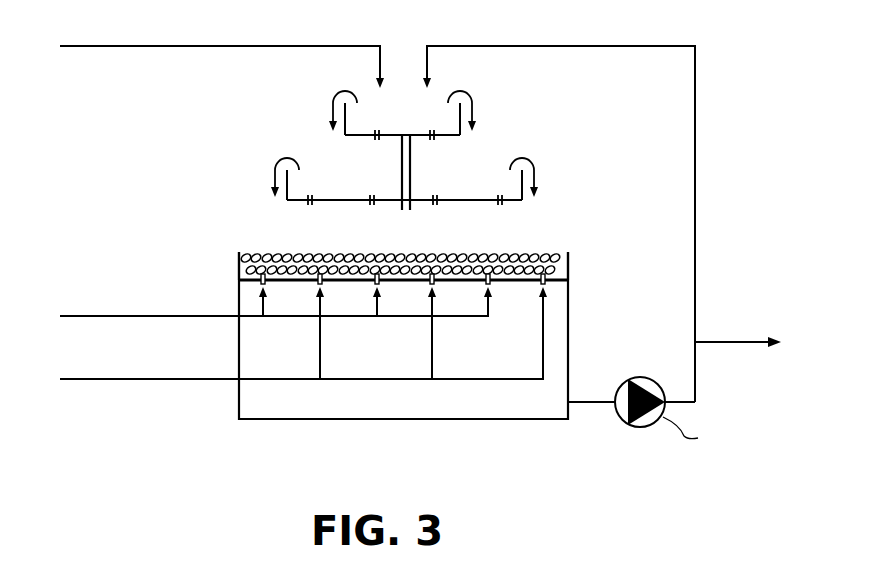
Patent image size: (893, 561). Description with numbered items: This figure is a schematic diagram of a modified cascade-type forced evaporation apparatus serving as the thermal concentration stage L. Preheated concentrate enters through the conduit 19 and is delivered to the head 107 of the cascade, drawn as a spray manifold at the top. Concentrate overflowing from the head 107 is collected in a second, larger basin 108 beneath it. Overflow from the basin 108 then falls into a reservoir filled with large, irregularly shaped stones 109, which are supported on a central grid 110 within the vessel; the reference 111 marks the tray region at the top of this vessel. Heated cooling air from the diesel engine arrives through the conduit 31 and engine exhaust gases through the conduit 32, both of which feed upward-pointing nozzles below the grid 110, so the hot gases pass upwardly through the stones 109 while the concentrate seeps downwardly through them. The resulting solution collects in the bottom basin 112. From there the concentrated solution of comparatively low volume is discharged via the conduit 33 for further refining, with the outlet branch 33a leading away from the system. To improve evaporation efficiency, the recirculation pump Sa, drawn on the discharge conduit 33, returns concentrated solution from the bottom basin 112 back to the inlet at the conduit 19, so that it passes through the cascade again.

The conduit 19 is at (156, 46).
The discharge conduit 33 is at (590, 45).
The outlet line 33a is at (758, 340).
The head of the cascade 107 is at (460, 109).
The second, larger basin 108 is at (522, 200).
The large, irregularly shaped stones 109 is at (262, 255).
The central grid 110 is at (512, 285).
The tray 111 is at (240, 272).
The bottom basin 112 is at (360, 420).
The conduit 31 is at (121, 316).
The conduit 32 is at (130, 381).
The thermal concentration stage L is at (577, 157).
The recirculation pump Sa is at (657, 420).